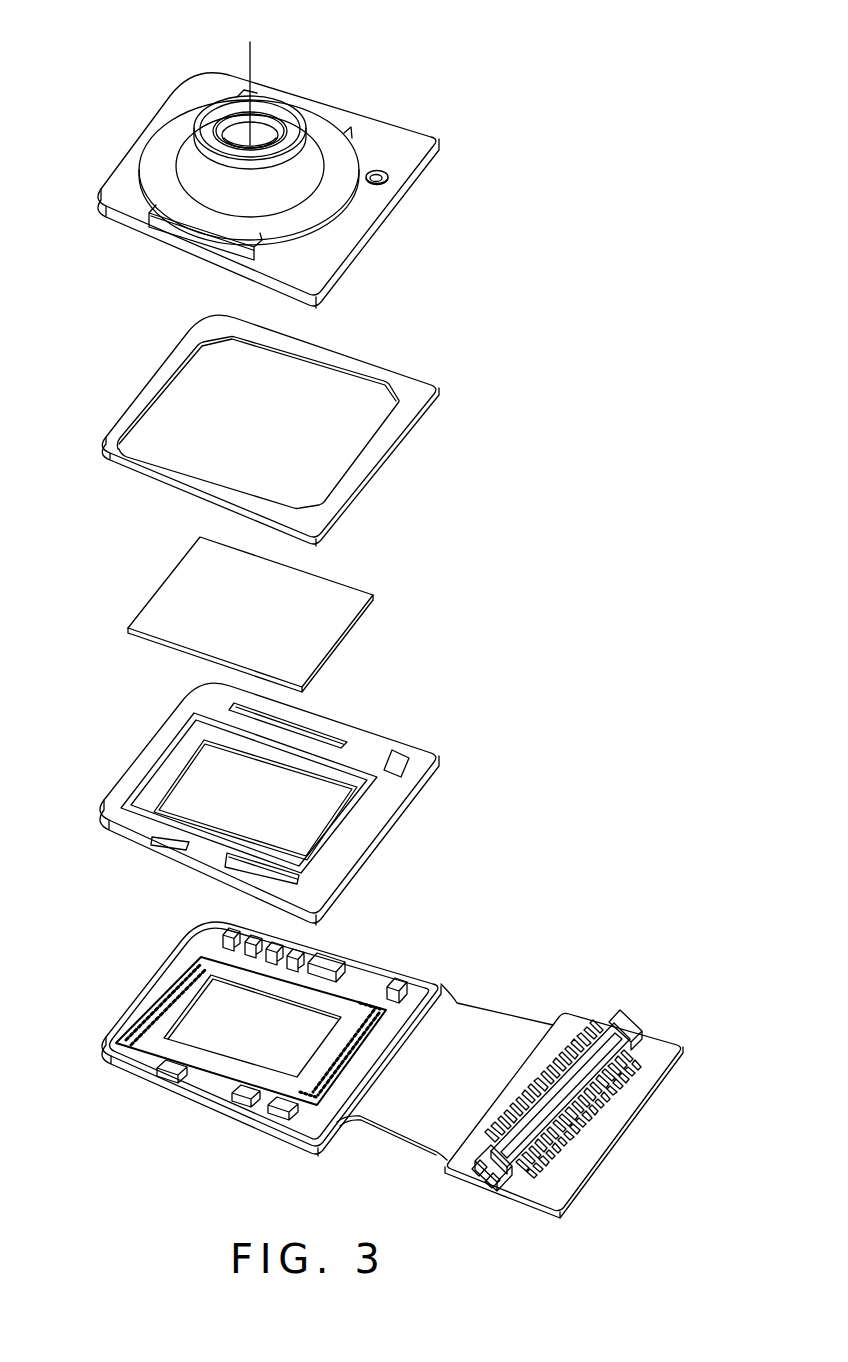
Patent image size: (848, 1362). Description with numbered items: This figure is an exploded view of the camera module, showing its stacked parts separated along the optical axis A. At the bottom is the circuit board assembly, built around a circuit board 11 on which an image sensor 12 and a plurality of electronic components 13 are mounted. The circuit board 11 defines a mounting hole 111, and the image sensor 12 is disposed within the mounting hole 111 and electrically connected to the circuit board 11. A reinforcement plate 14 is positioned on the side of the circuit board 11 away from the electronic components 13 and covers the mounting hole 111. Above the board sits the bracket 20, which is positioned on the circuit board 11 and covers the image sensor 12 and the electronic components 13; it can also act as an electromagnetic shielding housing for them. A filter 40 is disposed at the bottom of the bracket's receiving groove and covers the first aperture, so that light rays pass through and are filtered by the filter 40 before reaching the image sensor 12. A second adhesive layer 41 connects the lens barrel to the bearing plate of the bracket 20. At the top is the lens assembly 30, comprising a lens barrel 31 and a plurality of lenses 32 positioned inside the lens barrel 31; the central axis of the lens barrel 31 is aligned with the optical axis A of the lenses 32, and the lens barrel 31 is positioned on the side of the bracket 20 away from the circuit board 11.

The lens assembly 30 is at (405, 148).
The lens barrel 31 is at (187, 163).
The lenses 32 is at (265, 142).
The optical axis A is at (249, 80).
The second adhesive layer 41 is at (408, 397).
The filter 40 is at (330, 622).
The bracket 20 is at (382, 798).
The reinforcement plate 14 is at (258, 1125).
The image sensor 12 is at (233, 1048).
The mounting hole 111 is at (201, 1020).
The electronic components 13 is at (330, 965).
The circuit board 11 is at (403, 1118).